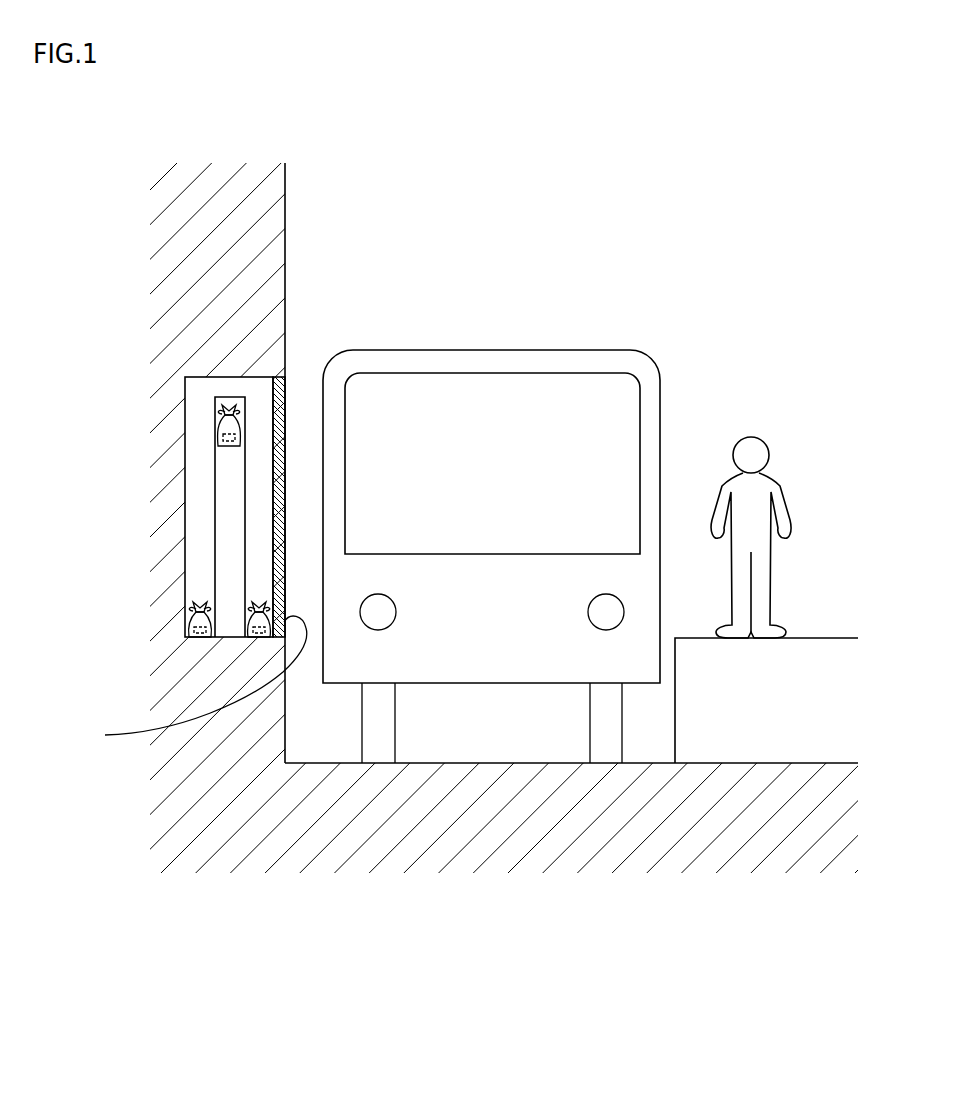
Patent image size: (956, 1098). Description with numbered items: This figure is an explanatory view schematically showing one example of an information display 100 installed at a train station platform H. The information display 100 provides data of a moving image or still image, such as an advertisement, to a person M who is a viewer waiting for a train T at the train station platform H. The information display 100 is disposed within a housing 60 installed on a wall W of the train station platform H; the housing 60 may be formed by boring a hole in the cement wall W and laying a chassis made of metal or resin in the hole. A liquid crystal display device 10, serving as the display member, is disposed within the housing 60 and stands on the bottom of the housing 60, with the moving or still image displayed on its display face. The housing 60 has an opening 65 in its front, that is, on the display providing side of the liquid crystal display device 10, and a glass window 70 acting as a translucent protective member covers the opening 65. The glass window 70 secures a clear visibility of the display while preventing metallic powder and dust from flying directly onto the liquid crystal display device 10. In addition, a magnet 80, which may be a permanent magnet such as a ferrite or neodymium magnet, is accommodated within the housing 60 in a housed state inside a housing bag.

The information display 100 is at (187, 511).
The housing 60 is at (186, 407).
The glass window 70 is at (286, 390).
The liquid crystal display device 10 is at (226, 491).
The magnet 80 is at (216, 433).
The opening 65 is at (192, 682).
The wall W is at (273, 218).
The train station platform H is at (762, 727).
The train T is at (591, 358).
The person M is at (765, 441).